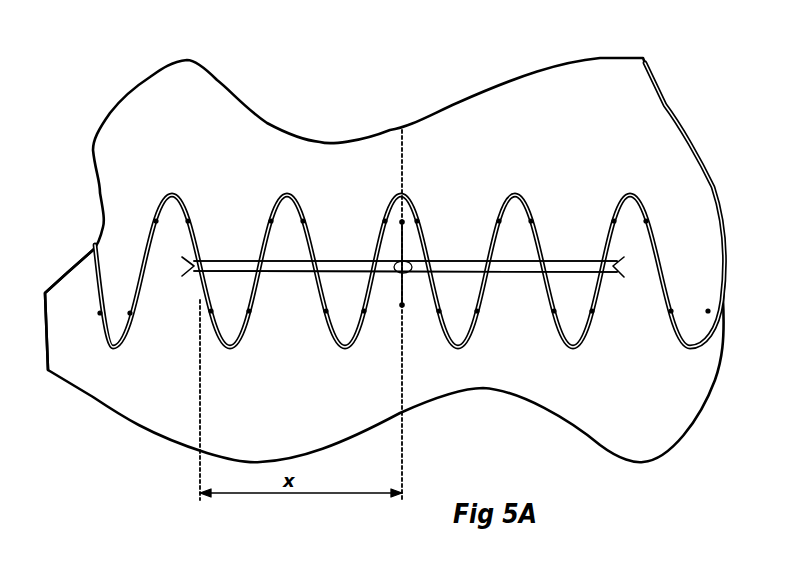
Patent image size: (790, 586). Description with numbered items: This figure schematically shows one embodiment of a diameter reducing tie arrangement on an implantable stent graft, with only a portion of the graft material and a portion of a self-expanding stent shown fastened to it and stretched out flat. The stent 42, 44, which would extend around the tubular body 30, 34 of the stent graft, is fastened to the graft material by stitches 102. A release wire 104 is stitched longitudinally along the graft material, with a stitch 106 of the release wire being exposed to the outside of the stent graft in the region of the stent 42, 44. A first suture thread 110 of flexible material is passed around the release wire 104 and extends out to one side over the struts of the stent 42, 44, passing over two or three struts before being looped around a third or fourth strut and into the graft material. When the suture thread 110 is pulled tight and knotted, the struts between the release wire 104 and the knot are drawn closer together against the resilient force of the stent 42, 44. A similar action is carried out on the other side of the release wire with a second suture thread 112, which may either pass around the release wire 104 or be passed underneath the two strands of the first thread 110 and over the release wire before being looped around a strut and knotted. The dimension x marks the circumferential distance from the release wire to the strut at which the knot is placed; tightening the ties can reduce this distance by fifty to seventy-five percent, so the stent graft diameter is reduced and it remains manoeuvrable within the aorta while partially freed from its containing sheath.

The tubular body 30 is at (385, 271).
The tubular body 34 is at (163, 360).
The stent 42 is at (409, 267).
The stent 44 is at (536, 231).
The stitches 102 is at (120, 324).
The release wire 104 is at (400, 247).
The stitch of the release wire 106 is at (402, 167).
The first suture thread 110 is at (268, 260).
The second suture thread 112 is at (458, 262).